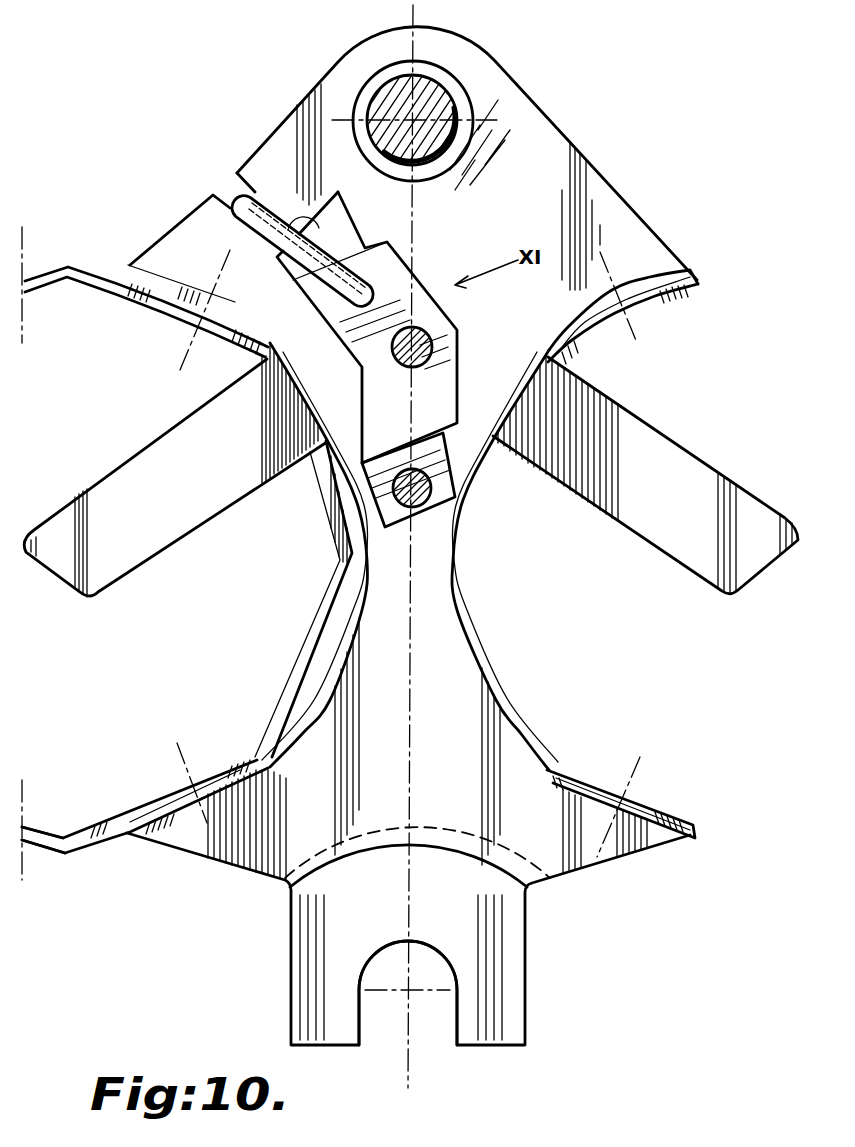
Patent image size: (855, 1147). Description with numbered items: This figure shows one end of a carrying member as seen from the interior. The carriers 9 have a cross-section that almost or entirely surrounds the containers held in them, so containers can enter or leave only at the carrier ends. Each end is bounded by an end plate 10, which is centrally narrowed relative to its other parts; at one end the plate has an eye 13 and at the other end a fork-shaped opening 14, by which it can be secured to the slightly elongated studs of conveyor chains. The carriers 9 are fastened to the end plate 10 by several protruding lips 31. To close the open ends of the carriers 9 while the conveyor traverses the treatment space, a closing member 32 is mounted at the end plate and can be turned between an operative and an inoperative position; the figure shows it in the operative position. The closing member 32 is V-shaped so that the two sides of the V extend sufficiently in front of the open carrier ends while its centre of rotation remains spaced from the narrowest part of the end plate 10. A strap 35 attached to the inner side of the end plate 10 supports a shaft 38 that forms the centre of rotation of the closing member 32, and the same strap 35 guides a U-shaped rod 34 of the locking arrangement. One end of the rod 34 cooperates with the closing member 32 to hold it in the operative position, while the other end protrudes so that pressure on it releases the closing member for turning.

The carrier 9 is at (40, 838).
The end plate 10 is at (257, 862).
The eye 13 is at (443, 97).
The fork-shaped opening 14 is at (430, 965).
The protruding lip 31 is at (187, 307).
The closing member 32 is at (143, 550).
The U-shaped rod 34 is at (313, 257).
The strap 35 is at (387, 267).
The shaft 38 is at (440, 347).